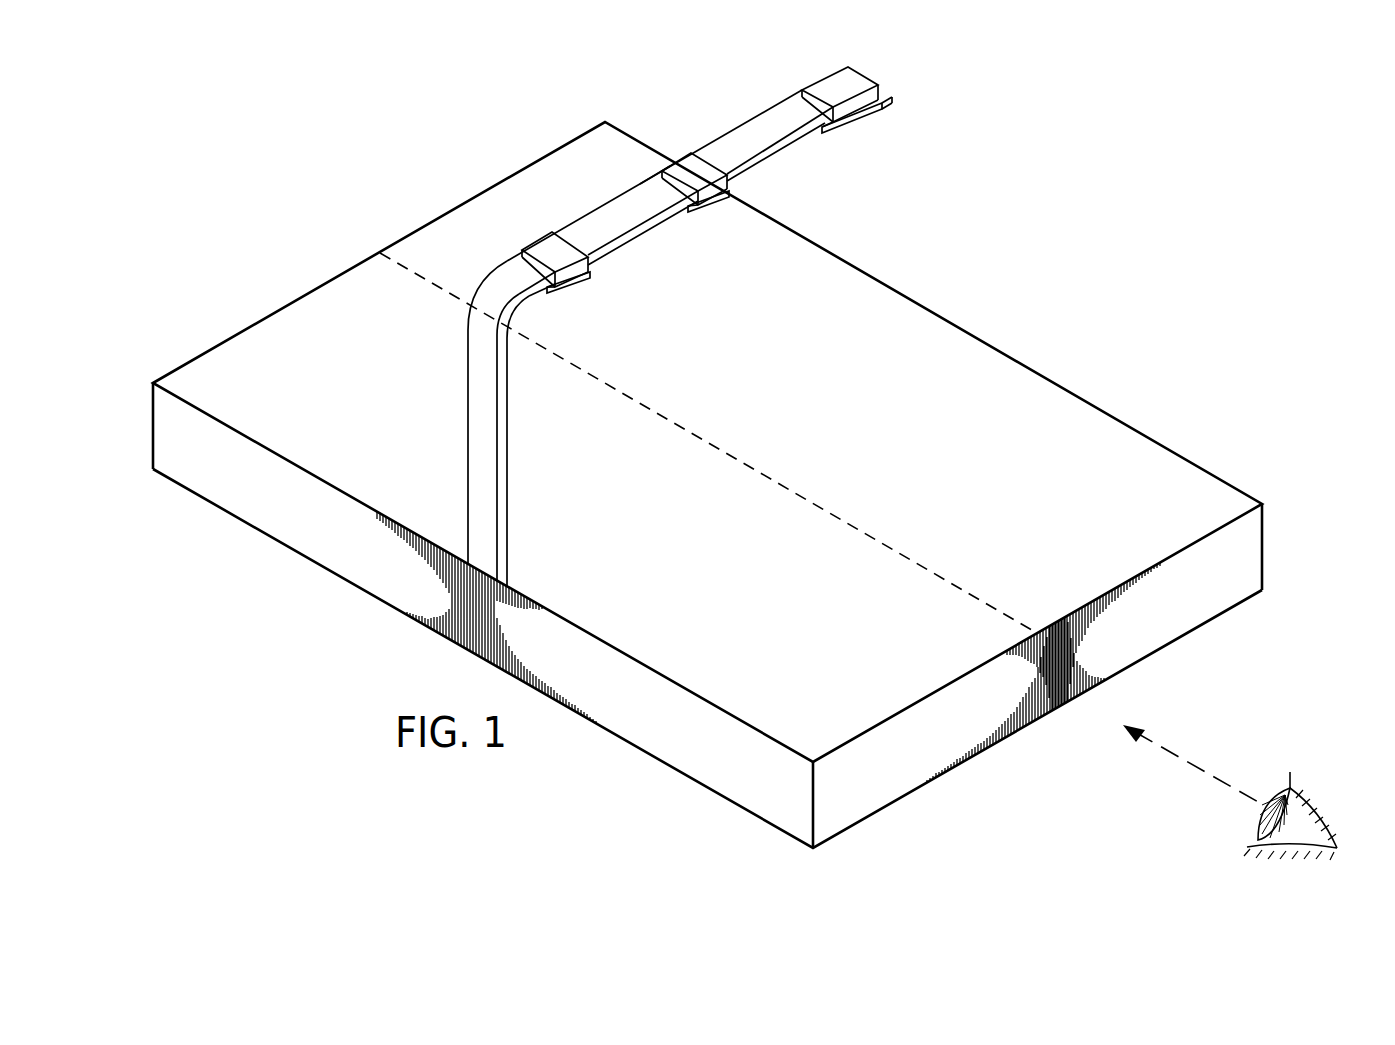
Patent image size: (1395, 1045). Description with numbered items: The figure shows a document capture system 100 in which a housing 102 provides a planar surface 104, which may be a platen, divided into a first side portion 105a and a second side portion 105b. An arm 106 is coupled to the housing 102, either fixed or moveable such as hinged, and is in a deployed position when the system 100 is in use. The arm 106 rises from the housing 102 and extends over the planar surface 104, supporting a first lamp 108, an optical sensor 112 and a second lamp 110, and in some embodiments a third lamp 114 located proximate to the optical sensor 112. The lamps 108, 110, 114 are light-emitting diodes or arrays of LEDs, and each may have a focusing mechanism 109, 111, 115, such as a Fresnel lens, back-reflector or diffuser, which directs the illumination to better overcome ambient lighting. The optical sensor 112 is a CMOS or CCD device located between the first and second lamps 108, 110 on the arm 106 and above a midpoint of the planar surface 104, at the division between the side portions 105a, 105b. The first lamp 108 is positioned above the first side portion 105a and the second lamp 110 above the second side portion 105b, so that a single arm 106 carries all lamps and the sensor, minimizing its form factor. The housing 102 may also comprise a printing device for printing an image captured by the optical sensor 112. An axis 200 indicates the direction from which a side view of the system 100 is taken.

The system 100 is at (1090, 134).
The housing 102 is at (1278, 550).
The planar surface 104 is at (1040, 383).
The first side portion 105a is at (843, 645).
The second side portion 105b is at (1068, 515).
The arm 106 is at (467, 436).
The first lamp 108 is at (546, 250).
The focusing mechanism 109 is at (571, 290).
The second lamp 110 is at (824, 86).
The focusing mechanism 111 is at (852, 124).
The optical sensor 112 is at (655, 182).
The third lamp 114 is at (678, 165).
The focusing mechanism 115 is at (703, 210).
The axis 200 is at (1198, 770).